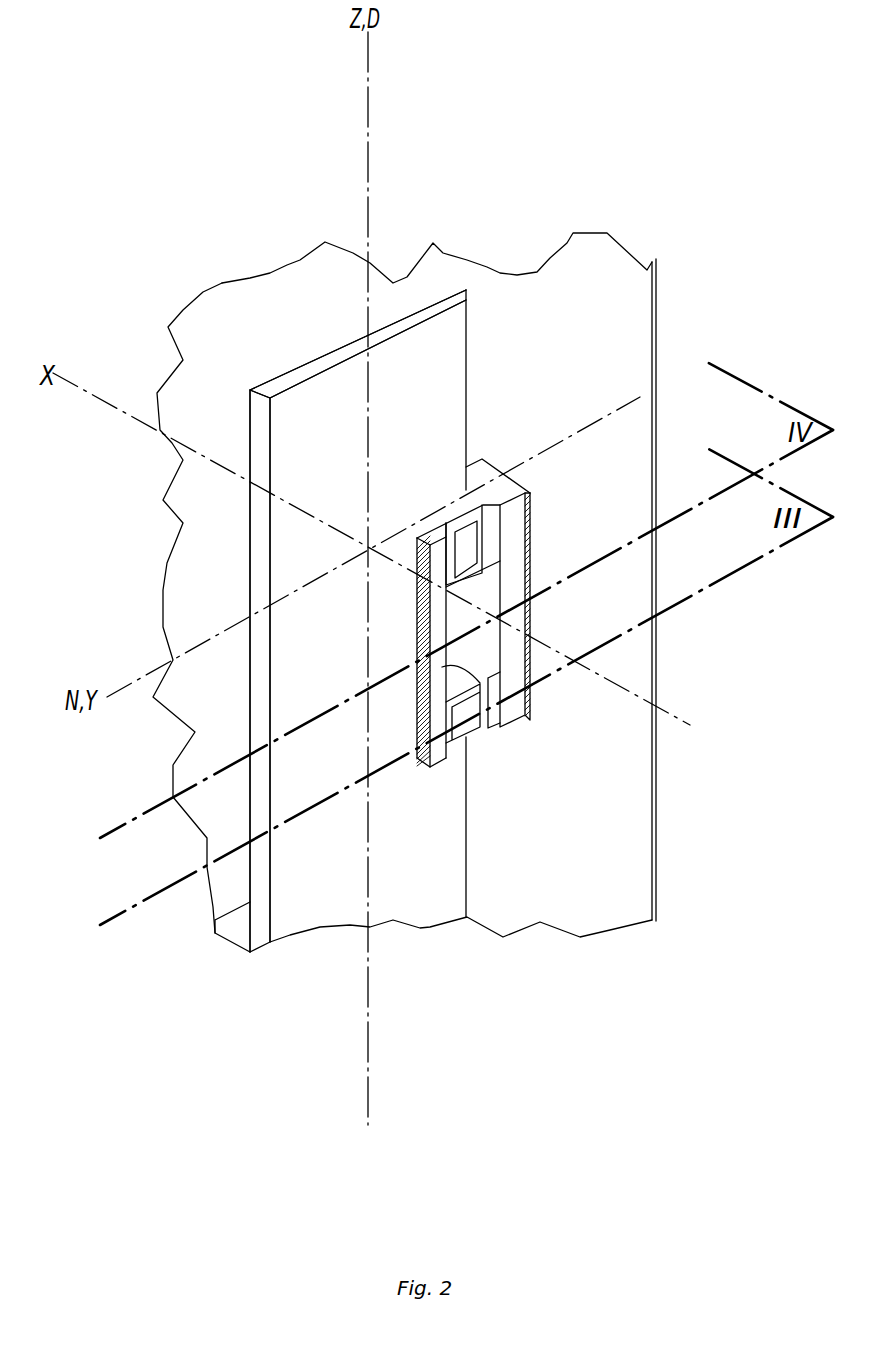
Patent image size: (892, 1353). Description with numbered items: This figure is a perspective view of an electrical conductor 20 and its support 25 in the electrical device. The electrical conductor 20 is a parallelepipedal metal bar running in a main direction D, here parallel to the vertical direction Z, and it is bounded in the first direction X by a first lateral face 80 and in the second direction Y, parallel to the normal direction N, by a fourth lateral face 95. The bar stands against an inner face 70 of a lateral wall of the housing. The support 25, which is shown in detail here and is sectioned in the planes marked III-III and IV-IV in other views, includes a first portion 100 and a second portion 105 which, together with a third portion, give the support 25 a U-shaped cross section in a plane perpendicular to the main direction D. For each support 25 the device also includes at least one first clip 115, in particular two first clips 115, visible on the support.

The electrical conductor 20 is at (297, 432).
The support 25 is at (512, 593).
The inner face 70 is at (600, 302).
The first lateral face 80 is at (399, 378).
The fourth lateral face 95 is at (264, 559).
The first portion 100 is at (500, 495).
The second portion 105 is at (488, 728).
The first clip 115 is at (457, 540).